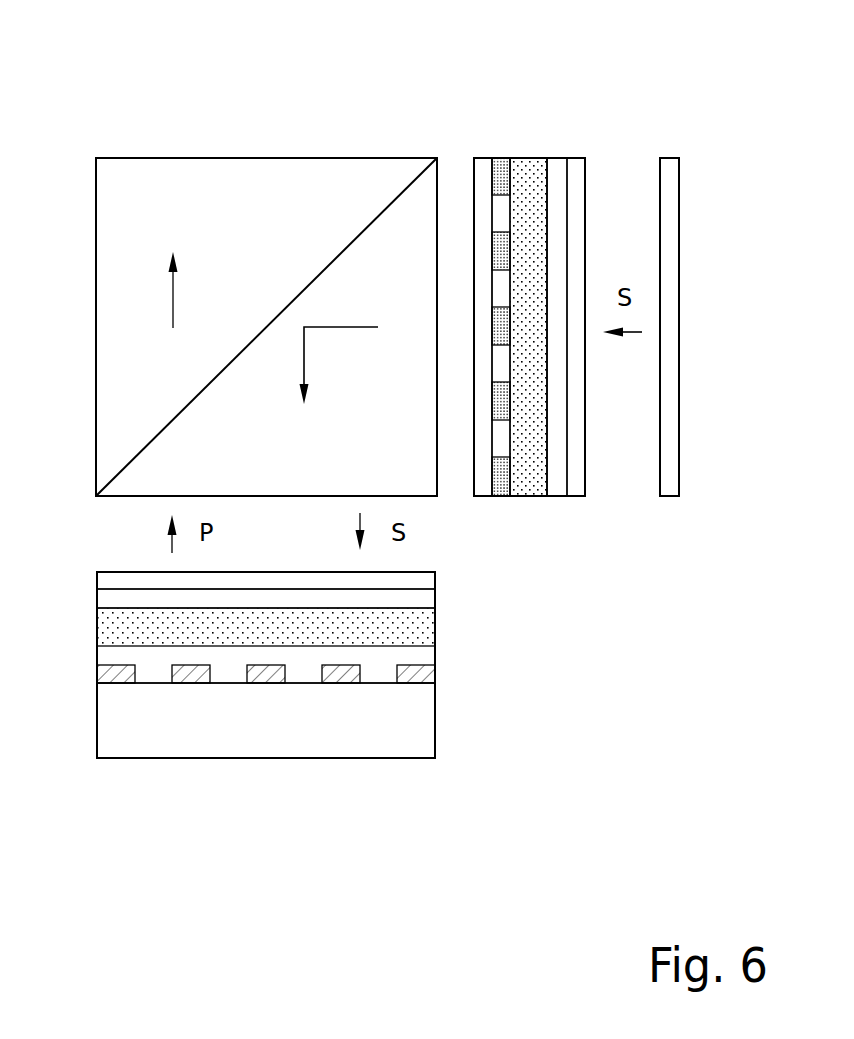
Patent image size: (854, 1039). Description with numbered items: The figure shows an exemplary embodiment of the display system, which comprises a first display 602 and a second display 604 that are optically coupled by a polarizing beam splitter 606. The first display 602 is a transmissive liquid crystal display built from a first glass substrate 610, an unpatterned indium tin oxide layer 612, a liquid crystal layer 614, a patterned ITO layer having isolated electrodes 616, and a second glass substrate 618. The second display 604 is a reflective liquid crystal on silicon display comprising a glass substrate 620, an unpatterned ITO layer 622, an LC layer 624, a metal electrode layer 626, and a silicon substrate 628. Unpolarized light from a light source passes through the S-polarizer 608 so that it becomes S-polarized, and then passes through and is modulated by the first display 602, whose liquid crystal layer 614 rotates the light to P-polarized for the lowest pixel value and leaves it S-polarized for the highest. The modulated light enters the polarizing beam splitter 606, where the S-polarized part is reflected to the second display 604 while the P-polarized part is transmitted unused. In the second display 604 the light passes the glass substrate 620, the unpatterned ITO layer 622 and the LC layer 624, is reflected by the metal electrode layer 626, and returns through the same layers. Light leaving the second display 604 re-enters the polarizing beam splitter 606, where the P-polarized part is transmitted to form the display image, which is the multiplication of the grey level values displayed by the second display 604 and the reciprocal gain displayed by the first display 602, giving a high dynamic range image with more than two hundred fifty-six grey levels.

The first display 602 is at (532, 254).
The second display 604 is at (287, 650).
The polarizing beam splitter 606 is at (297, 208).
The S-polarizer 608 is at (679, 233).
The first glass substrate 610 is at (573, 148).
The unpatterned indium tin oxide layer 612 is at (560, 140).
The liquid crystal layer 614 is at (528, 140).
The patterned ITO layer having isolated electrodes 616 is at (502, 140).
The second glass substrate 618 is at (482, 148).
The glass substrate 620 is at (448, 580).
The unpatterned ITO layer 622 is at (448, 598).
The LC layer 624 is at (448, 627).
The metal electrode layer 626 is at (448, 673).
The silicon substrate 628 is at (358, 738).